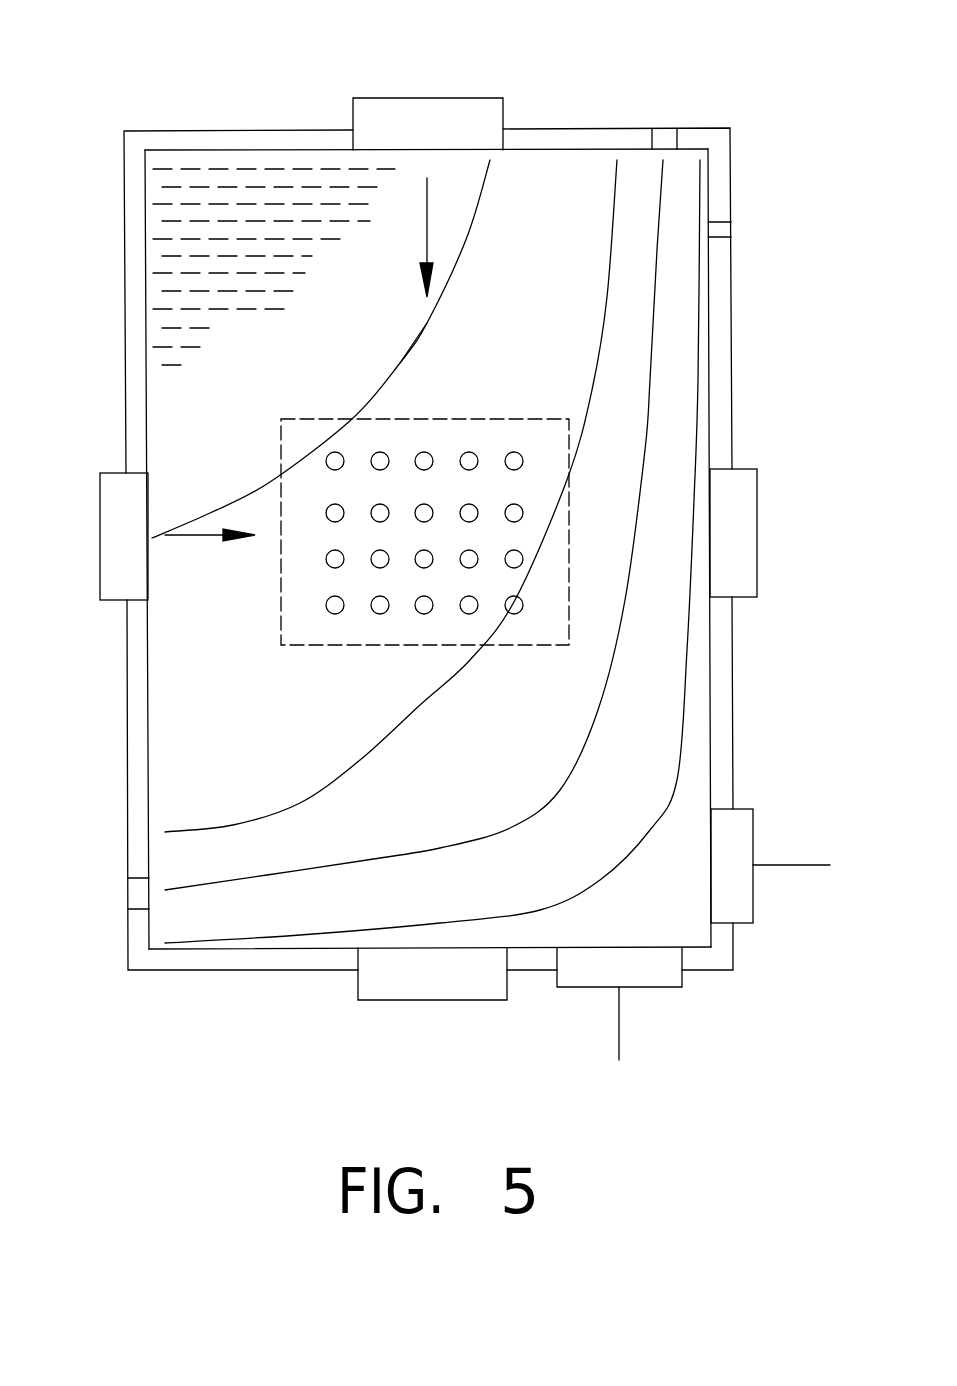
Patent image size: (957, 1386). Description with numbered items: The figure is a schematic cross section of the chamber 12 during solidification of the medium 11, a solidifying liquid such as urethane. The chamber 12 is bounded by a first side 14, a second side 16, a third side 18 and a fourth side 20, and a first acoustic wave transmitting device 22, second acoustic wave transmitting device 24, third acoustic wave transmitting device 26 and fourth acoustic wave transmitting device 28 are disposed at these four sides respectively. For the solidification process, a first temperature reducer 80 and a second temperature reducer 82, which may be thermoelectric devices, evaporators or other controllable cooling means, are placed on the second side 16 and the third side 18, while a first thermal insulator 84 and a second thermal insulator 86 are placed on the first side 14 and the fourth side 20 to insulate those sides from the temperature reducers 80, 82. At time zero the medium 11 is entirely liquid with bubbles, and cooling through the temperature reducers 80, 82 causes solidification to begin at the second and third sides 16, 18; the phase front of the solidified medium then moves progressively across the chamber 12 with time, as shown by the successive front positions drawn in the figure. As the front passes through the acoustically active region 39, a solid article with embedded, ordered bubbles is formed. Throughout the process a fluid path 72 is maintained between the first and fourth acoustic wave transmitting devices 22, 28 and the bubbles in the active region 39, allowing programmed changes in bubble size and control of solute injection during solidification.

The medium 11 is at (445, 385).
The chamber 12 is at (280, 43).
The first side 14 is at (127, 703).
The second side 16 is at (733, 725).
The third side 18 is at (285, 968).
The fourth side 20 is at (525, 127).
The first acoustic wave transmitting device 22 is at (100, 497).
The second acoustic wave transmitting device 24 is at (757, 540).
The third acoustic wave transmitting device 26 is at (468, 1000).
The fourth acoustic wave transmitting device 28 is at (428, 98).
The acoustically active region 39 is at (330, 418).
The fluid path 72 is at (427, 217).
The first temperature reducer 80 is at (753, 831).
The second temperature reducer 82 is at (642, 987).
The first thermal insulator 84 is at (667, 129).
The second thermal insulator 86 is at (128, 894).